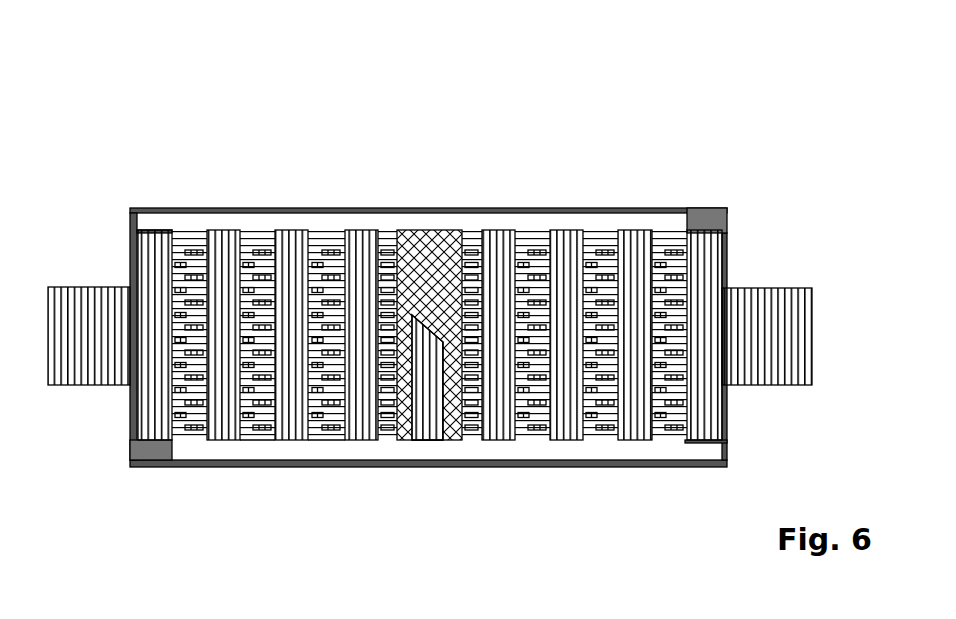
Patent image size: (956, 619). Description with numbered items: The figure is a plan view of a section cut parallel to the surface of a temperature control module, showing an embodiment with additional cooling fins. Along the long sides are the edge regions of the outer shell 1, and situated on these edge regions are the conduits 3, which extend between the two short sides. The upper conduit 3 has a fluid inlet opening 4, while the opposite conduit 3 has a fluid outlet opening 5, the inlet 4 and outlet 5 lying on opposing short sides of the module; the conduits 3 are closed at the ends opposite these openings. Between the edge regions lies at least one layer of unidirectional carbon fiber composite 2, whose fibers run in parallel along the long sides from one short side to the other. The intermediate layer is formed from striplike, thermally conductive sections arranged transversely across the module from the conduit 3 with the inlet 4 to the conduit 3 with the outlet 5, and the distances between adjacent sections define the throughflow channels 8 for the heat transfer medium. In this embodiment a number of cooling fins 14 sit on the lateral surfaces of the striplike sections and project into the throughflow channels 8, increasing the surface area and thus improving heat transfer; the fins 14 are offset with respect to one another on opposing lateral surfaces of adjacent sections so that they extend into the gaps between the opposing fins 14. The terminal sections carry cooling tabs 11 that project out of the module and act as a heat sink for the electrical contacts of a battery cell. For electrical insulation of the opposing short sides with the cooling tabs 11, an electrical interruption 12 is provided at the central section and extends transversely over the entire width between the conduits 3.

The outer shell 1 is at (148, 210).
The unidirectional carbon fiber composite 2 is at (247, 240).
The conduit 3 is at (590, 220).
The fluid inlet opening 4 is at (122, 218).
The fluid outlet opening 5 is at (727, 450).
The throughflow channel 8 is at (327, 430).
The cooling tab 11 is at (775, 338).
The electrical interruption 12 is at (433, 248).
The cooling fin 14 is at (253, 273).